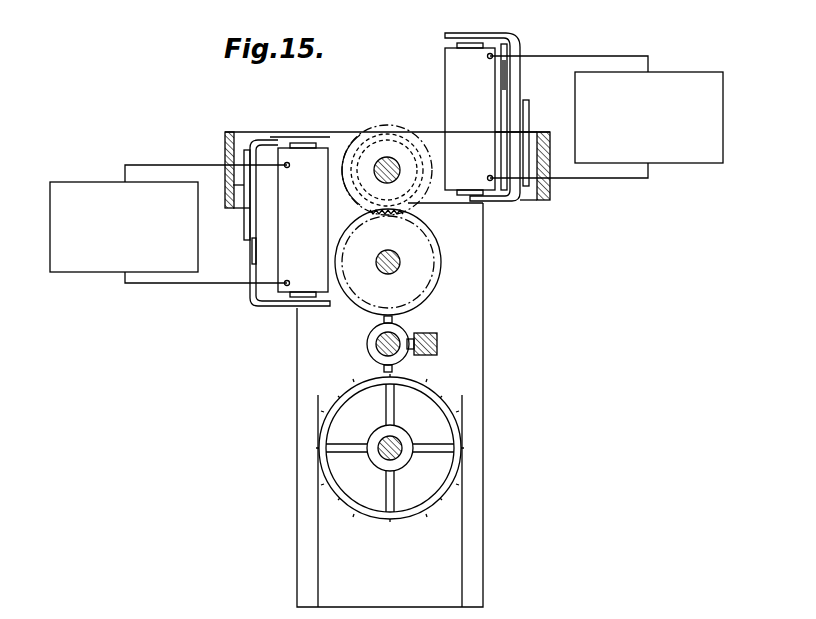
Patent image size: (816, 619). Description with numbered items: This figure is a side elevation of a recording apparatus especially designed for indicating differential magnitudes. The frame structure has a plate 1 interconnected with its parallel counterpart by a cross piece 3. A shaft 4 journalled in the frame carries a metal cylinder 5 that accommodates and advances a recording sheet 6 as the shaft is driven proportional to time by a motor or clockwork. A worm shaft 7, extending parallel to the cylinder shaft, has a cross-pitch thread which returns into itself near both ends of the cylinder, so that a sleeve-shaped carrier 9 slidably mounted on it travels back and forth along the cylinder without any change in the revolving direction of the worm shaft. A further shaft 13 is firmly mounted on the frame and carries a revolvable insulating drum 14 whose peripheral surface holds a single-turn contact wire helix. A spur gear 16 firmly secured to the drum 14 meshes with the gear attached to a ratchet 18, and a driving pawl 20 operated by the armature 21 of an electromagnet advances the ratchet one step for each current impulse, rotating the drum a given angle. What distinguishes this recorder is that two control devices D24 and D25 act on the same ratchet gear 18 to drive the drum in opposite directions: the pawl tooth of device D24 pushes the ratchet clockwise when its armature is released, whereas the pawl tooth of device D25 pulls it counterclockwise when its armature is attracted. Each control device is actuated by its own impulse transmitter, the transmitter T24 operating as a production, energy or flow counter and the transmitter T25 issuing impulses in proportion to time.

The plate 1 is at (478, 330).
The cross piece 3 is at (550, 201).
The shaft 4 is at (401, 446).
The metal cylinder 5 is at (427, 392).
The recording sheet 6 is at (318, 558).
The worm shaft 7 is at (401, 341).
The sleeve-shaped carrier 9 is at (375, 351).
The shaft 13 is at (386, 266).
The insulating cylindric body or drum 14 is at (437, 274).
The spur gear 16 is at (425, 250).
The ratchet 18 is at (390, 127).
The driving pawl 20 is at (432, 204).
The armature 21 is at (463, 36).
The control device D24 is at (470, 119).
The control device D25 is at (281, 223).
The impulse transmitter T24 is at (609, 113).
The impulse transmitter T25 is at (93, 178).